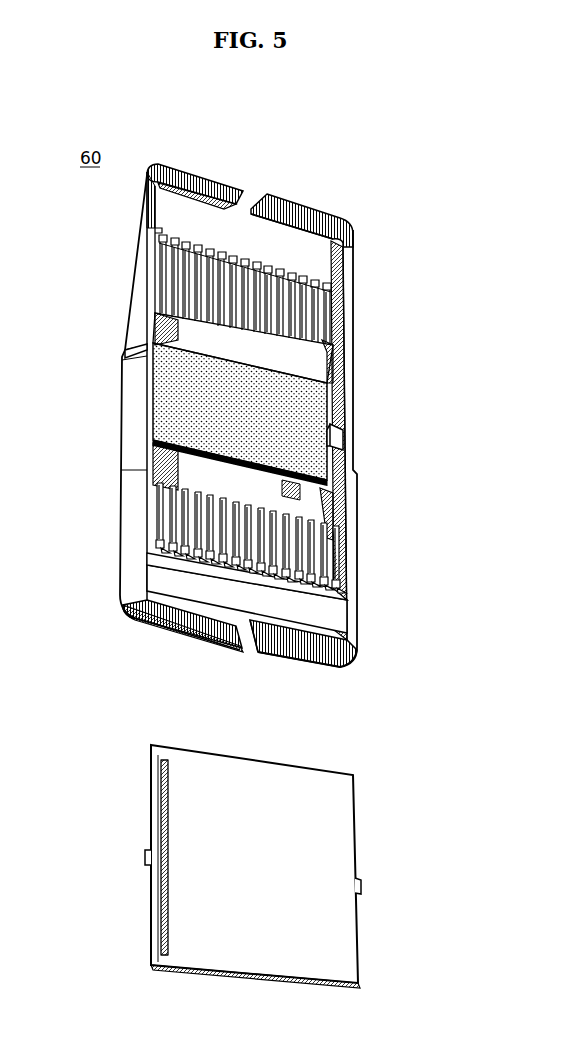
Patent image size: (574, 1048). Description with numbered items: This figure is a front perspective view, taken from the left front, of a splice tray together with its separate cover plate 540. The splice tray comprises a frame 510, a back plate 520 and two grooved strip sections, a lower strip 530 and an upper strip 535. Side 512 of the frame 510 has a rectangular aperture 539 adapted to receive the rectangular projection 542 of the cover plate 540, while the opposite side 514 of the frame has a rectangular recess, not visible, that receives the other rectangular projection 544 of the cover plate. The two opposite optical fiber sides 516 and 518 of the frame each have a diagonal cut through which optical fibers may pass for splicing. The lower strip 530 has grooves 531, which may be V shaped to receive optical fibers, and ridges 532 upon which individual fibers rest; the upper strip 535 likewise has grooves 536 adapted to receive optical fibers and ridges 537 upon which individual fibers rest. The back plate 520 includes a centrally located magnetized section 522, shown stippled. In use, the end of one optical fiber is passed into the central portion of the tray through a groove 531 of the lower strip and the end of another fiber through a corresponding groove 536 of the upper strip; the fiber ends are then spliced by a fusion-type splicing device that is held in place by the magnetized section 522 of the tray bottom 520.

The frame 510 is at (135, 268).
The side of frame 512 is at (133, 374).
The side of frame 514 is at (128, 480).
The optical fiber side 516 is at (213, 185).
The optical fiber side 518 is at (196, 628).
The back plate 520 is at (307, 490).
The magnetized section 522 is at (170, 408).
The lower strip 530 is at (278, 502).
The grooves 531 is at (325, 603).
The ridges 532 is at (330, 546).
The upper strip 535 is at (258, 250).
The grooves 536 is at (303, 267).
The ridges 537 is at (315, 329).
The rectangular aperture 539 is at (332, 443).
The cover plate 540 is at (260, 798).
The rectangular projection 542 is at (363, 886).
The rectangular projection 544 is at (145, 858).